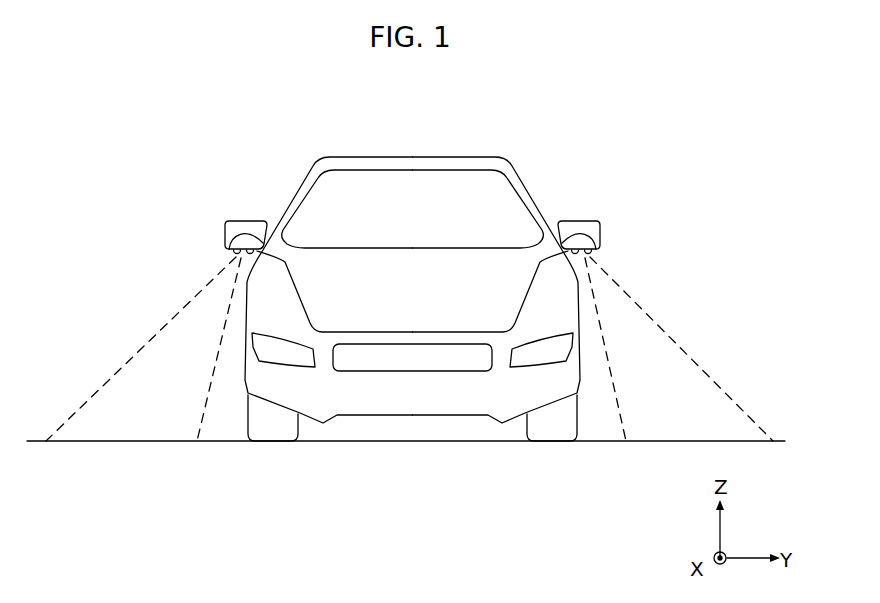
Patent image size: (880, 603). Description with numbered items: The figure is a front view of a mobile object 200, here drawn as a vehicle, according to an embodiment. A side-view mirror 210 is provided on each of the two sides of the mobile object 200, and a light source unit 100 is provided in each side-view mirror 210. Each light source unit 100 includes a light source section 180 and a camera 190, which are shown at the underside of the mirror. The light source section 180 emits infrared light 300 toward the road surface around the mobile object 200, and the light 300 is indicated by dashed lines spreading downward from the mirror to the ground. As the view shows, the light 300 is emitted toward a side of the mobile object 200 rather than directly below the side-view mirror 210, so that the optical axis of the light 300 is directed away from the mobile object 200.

The light source unit 100 is at (413, 217).
The light source section 180 is at (230, 253).
The camera 190 is at (226, 232).
The mobile object 200 is at (642, 147).
The side-view mirror 210 is at (238, 221).
The light 300 is at (148, 340).